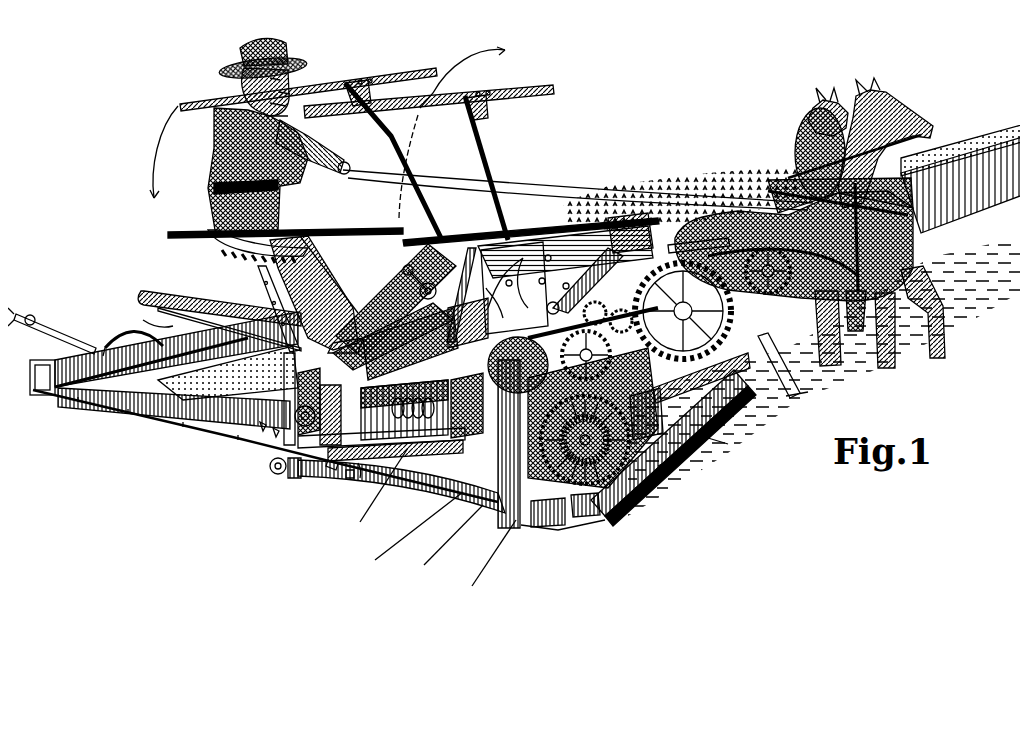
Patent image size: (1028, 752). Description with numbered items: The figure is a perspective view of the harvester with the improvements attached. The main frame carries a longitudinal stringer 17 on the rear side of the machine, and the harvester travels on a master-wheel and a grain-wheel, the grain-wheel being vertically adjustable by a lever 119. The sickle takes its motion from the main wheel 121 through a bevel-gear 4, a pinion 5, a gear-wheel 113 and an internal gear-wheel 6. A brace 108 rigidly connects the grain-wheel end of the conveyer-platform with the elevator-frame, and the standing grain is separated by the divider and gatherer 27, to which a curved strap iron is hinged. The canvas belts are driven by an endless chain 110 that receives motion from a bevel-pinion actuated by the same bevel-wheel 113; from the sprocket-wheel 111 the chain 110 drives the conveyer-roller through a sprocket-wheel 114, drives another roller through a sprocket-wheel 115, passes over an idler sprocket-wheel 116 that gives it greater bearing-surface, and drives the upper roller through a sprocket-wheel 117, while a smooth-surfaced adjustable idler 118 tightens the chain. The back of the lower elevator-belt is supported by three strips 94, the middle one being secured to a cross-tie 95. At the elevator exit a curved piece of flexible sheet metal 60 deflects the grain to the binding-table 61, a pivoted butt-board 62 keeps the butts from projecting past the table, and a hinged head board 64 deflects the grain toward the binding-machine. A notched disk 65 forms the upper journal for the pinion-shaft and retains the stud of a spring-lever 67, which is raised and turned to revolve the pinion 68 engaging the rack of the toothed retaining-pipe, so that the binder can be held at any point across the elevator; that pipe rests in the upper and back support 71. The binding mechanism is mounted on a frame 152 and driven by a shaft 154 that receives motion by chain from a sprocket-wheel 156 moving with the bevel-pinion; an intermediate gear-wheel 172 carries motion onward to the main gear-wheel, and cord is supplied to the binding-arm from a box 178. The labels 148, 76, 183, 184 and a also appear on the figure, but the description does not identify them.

The driver's seat 148 is at (285, 290).
The lever 119 is at (52, 330).
The adjustable idler 118 is at (133, 335).
The connecting link a is at (151, 315).
The divider and gatherer 27 is at (178, 357).
The brace 108 is at (151, 365).
The longitudinal stringer 17 is at (265, 446).
The idler sprocket-wheel 116 is at (257, 417).
The sprocket-wheel 115 is at (267, 423).
The sprocket-wheel 114 is at (274, 470).
The endless chain 110 is at (321, 476).
The strips 94 is at (341, 468).
The cross-tie 95 is at (362, 480).
The front sill 76 is at (401, 470).
The pinion 68 is at (377, 494).
The internal gear-wheel 6 is at (415, 532).
The pinion 5 is at (452, 542).
The sprocket-wheel 156 is at (487, 561).
The sprocket-wheel 111 is at (515, 522).
The main wheel 121 is at (638, 459).
The bevel-gear 4 is at (658, 463).
The gear-wheel 113 is at (717, 437).
The cord box 178 is at (404, 410).
The shaft bearing 184 is at (560, 305).
The binder-frame 152 is at (590, 306).
The intermediate gear-wheel 172 is at (623, 318).
The spring-lever 67 is at (415, 256).
The notched disk 65 is at (397, 243).
The sprocket-wheel 117 is at (440, 236).
The head board 64 is at (502, 272).
The upper and back support 71 is at (535, 270).
The lever 183 is at (542, 247).
The driving-shaft 154 is at (560, 275).
The curved sheet-metal deflector 60 is at (600, 240).
The butt-board 62 is at (612, 250).
The binding-table 61 is at (642, 272).